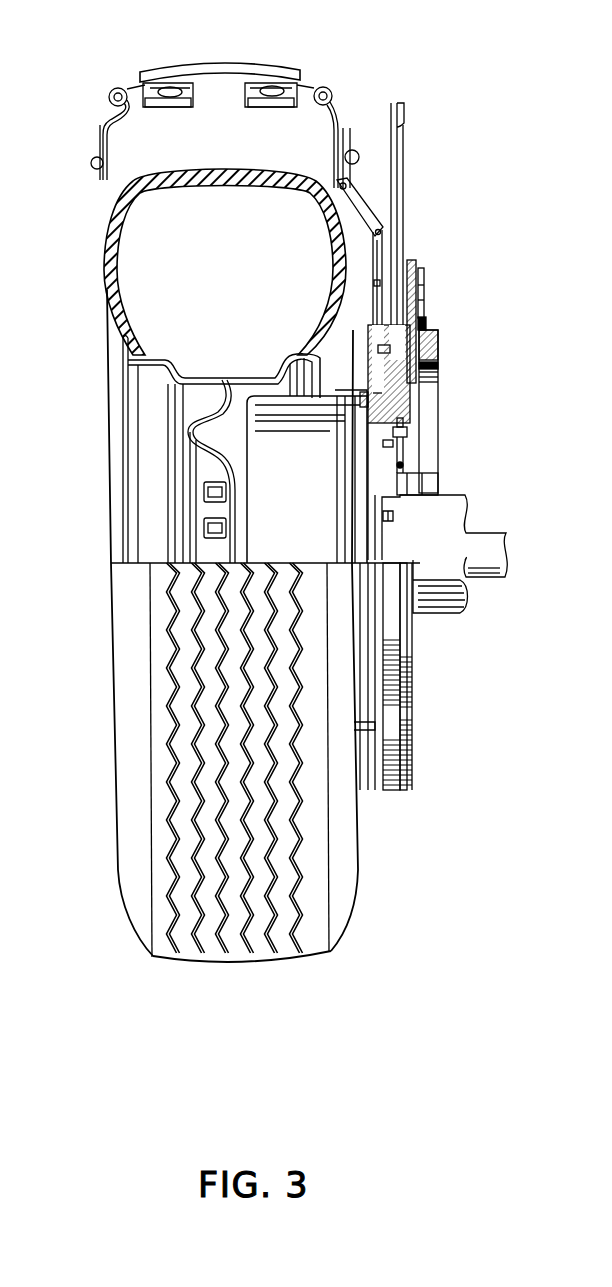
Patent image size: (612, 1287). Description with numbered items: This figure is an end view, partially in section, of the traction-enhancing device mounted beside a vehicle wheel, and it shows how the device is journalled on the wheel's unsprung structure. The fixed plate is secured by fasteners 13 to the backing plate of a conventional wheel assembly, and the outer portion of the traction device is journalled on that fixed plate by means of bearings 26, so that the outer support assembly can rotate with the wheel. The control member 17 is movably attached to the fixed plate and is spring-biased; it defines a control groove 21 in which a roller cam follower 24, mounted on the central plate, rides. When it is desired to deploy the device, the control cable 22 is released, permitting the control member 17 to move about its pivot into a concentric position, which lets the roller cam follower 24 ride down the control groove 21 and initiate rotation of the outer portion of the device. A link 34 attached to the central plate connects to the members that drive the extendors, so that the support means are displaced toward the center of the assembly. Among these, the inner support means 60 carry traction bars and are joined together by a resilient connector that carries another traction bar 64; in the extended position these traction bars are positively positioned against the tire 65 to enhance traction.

The traction bar 64 is at (203, 69).
The inner support means 60 is at (370, 224).
The link 34 is at (418, 312).
The roller cam follower 24 is at (428, 318).
The control groove 21 is at (423, 343).
The bearings 26 is at (420, 365).
The control member 17 is at (428, 399).
The control cable 22 is at (403, 468).
The fasteners 13 is at (394, 515).
The tire 65 is at (128, 751).